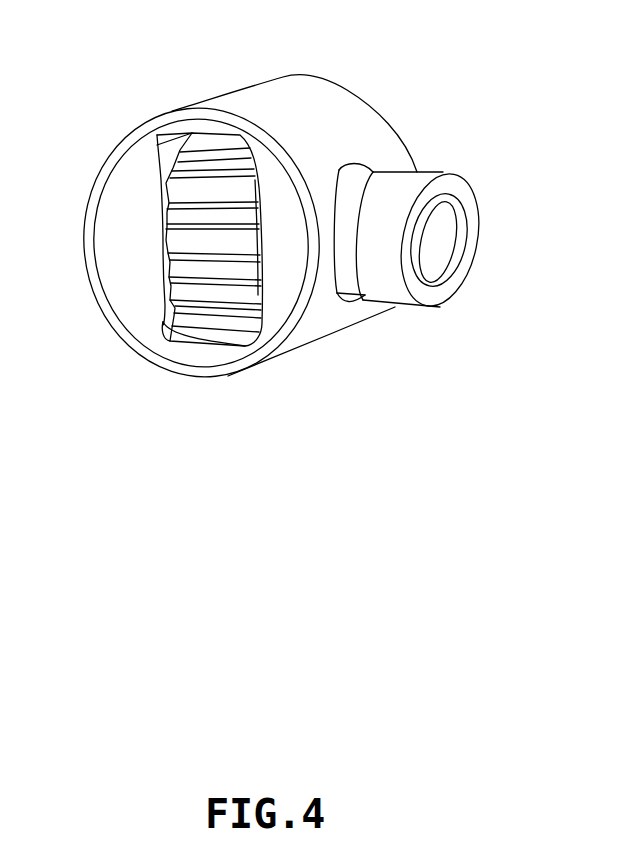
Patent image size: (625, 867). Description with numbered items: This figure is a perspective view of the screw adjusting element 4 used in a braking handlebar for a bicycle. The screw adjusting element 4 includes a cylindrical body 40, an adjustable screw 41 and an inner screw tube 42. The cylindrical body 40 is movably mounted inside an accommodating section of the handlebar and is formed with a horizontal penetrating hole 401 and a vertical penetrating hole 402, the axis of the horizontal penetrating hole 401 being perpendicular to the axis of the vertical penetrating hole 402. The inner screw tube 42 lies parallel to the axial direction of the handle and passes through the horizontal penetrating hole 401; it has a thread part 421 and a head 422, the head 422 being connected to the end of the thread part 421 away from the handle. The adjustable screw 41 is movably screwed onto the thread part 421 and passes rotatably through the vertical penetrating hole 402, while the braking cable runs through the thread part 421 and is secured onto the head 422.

The screw adjusting element 4 is at (108, 74).
The cylindrical body 40 is at (300, 108).
The adjustable screw 41 is at (177, 189).
The inner screw tube 42 is at (490, 89).
The horizontal penetrating hole 401 is at (352, 300).
The vertical penetrating hole 402 is at (180, 327).
The thread part 421 is at (350, 184).
The head 422 is at (433, 233).